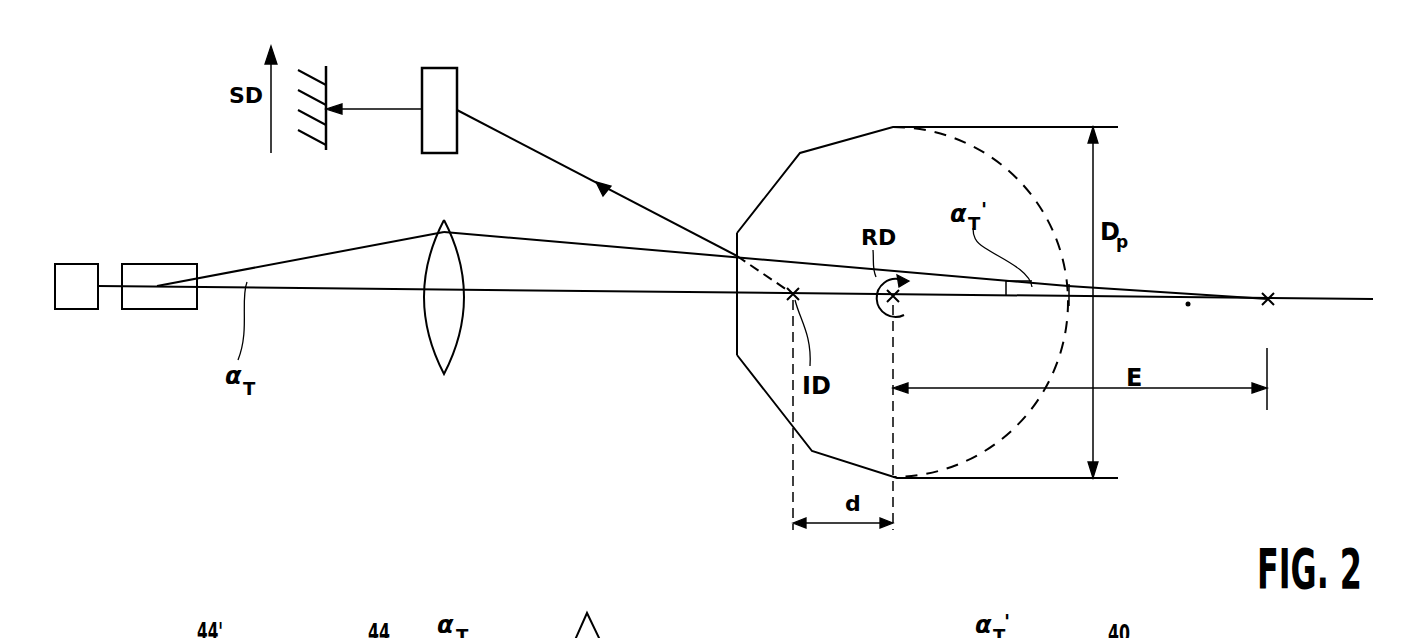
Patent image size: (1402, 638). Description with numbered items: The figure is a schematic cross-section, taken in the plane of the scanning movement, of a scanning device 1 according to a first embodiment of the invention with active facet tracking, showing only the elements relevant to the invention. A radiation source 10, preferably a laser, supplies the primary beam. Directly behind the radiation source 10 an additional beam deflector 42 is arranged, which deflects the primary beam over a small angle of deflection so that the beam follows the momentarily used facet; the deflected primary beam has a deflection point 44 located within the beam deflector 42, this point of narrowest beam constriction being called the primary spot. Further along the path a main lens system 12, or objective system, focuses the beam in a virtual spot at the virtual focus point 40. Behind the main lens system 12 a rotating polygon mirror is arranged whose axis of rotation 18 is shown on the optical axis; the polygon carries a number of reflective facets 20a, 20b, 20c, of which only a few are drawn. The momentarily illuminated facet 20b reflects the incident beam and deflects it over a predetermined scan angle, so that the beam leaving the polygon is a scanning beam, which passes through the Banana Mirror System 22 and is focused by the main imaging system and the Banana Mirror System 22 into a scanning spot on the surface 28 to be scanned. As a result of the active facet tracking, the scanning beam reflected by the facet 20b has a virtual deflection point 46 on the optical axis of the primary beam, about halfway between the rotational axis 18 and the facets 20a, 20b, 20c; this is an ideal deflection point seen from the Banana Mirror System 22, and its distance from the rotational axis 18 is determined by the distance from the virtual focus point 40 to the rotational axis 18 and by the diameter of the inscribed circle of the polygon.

The scanning device 1 is at (157, 105).
The radiation source 10 is at (68, 297).
The main lens system 12 is at (451, 325).
The axis of rotation of the polygon mirror 18 is at (895, 312).
The reflective facet 20a is at (769, 192).
The reflective facet 20b is at (737, 316).
The reflective facet 20c is at (772, 400).
The Banana Mirror System 22 is at (457, 88).
The surface to be scanned 28 is at (327, 82).
The virtual focus point 40 is at (1268, 290).
The beam deflector 42 is at (158, 300).
The deflection point of the primary beam 44 is at (157, 286).
The virtual deflection point 46 is at (795, 298).